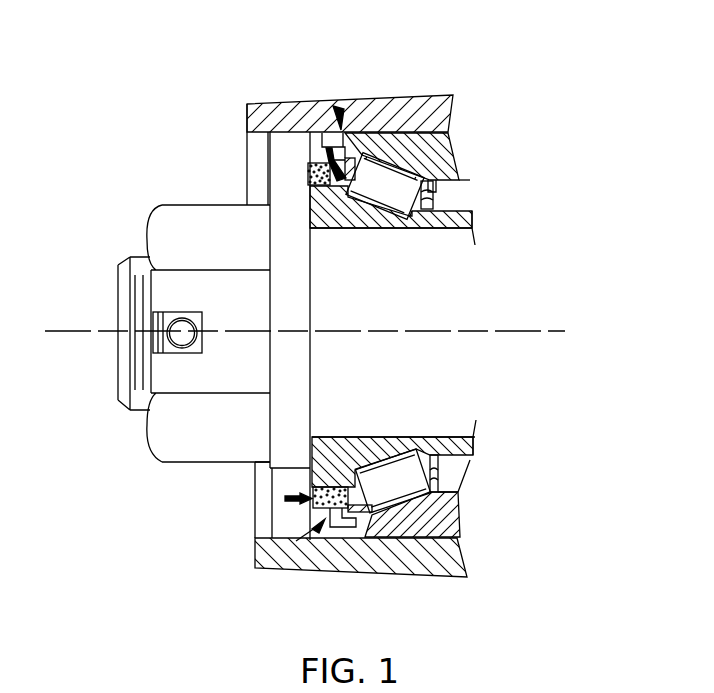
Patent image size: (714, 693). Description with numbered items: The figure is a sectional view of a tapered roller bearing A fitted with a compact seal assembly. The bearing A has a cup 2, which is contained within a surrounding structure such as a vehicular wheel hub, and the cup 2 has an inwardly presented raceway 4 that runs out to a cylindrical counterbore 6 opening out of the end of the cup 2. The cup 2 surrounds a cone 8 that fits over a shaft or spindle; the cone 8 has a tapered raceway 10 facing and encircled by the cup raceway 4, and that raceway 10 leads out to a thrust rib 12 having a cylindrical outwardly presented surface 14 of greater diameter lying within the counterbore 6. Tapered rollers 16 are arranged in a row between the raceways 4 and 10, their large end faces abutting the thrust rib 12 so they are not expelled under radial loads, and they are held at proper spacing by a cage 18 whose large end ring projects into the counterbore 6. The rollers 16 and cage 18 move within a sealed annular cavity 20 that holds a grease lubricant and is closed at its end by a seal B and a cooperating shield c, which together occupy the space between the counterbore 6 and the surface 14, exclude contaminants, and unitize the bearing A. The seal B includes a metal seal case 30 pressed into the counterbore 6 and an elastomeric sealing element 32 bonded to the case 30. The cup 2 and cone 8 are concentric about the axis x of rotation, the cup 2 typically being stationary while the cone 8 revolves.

The cup 2 is at (357, 346).
The raceway 4 is at (405, 178).
The cylindrical counterbore 6 is at (357, 346).
The cone 8 is at (350, 229).
The tapered raceway 10 is at (397, 196).
The thrust rib 12 is at (306, 190).
The cylindrical outwardly presented surface 14 is at (308, 178).
The tapered rollers 16 is at (421, 209).
The cage 18 is at (433, 184).
The annular cavity 20 is at (422, 200).
The seal case 30 is at (372, 524).
The sealing element 32 is at (325, 512).
The tapered roller bearing A is at (336, 106).
The seal B is at (303, 558).
The shield c is at (284, 499).
The axis of rotation x is at (312, 332).